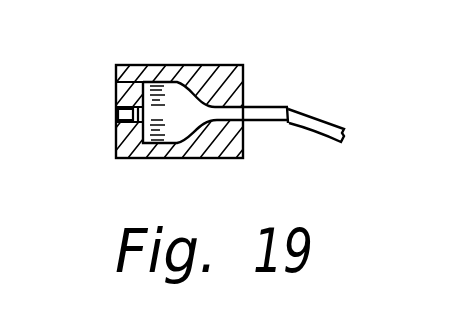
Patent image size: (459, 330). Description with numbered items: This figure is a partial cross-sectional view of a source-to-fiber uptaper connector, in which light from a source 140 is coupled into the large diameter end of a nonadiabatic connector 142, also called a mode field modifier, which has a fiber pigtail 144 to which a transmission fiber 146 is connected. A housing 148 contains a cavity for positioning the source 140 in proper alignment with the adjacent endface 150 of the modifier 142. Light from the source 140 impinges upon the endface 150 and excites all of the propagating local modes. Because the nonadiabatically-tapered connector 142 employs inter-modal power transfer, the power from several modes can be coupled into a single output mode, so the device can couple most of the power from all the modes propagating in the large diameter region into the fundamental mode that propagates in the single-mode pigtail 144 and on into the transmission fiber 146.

The source 140 is at (120, 109).
The nonadiabatic connector 142 is at (181, 117).
The fiber pigtail 144 is at (265, 121).
The transmission fiber 146 is at (316, 118).
The housing 148 is at (198, 72).
The endface 150 is at (117, 82).